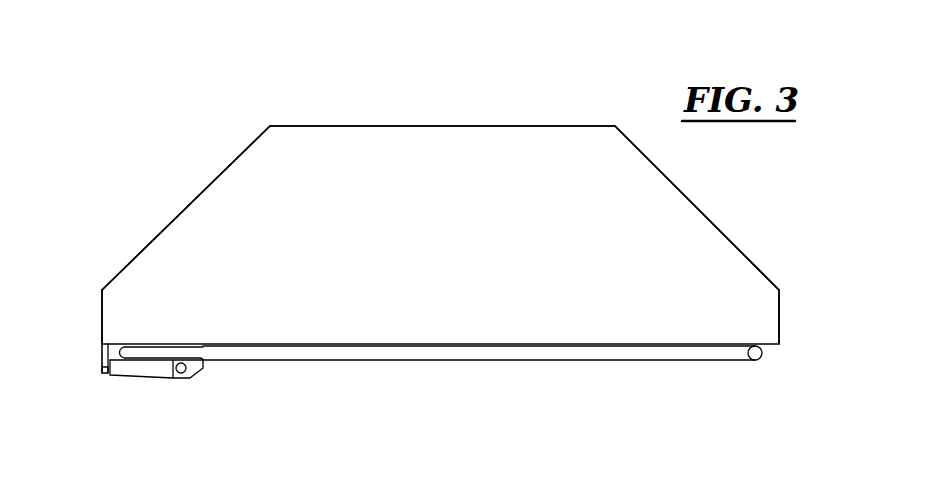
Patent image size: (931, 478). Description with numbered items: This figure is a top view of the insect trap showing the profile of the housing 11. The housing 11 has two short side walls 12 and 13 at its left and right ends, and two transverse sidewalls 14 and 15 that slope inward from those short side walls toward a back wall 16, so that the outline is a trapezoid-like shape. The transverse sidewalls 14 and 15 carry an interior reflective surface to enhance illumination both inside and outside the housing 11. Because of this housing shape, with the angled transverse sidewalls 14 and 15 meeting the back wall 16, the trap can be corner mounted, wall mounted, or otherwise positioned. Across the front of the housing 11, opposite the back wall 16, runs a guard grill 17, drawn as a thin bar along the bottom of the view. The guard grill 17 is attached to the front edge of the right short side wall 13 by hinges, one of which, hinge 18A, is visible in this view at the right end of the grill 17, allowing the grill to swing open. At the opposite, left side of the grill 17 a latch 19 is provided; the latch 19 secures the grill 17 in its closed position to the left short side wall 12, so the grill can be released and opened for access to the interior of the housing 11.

The housing 11 is at (512, 122).
The short side wall 12 is at (102, 307).
The short side wall 13 is at (780, 323).
The transverse sidewall 14 is at (215, 177).
The transverse sidewall 15 is at (693, 203).
The back wall 16 is at (377, 125).
The guard grill 17 is at (586, 366).
The hinge 18A is at (755, 360).
The latch 19 is at (152, 375).